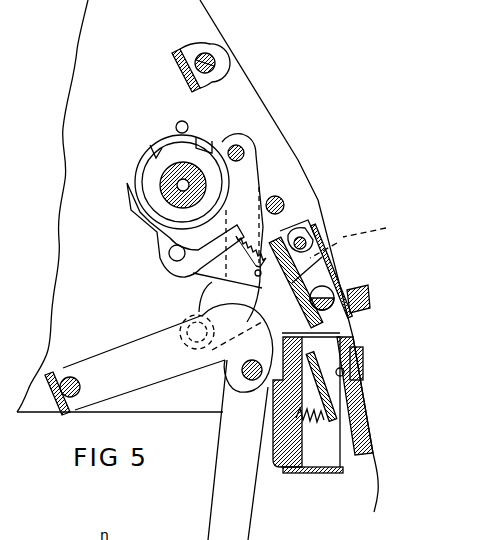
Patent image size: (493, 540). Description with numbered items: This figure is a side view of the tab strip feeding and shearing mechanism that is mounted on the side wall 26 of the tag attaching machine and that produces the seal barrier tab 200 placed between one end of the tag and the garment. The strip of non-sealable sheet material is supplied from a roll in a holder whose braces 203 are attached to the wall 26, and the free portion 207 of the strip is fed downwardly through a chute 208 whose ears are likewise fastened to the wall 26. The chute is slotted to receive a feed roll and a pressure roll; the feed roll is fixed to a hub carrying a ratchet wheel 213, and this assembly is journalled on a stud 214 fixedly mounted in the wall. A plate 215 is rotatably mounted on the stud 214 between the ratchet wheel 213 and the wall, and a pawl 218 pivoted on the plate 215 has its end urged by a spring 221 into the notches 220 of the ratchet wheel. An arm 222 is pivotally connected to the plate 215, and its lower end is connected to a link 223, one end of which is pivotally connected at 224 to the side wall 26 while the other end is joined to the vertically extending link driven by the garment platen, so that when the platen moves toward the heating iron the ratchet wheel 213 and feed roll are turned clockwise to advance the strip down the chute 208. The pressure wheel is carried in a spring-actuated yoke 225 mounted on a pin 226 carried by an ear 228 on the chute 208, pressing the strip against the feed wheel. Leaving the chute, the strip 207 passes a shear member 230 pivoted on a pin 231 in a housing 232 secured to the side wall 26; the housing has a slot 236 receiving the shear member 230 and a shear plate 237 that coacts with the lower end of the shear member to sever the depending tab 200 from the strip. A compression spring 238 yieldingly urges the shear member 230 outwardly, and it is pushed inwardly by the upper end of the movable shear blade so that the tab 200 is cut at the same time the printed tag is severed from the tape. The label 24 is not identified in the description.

The tab 200 is at (377, 488).
The frame wall 24 is at (297, 158).
The wall 26 is at (108, 107).
The braces 203 is at (180, 52).
The free portion of the strip material 207 is at (280, 217).
The chute 208 is at (318, 262).
The ratchet wheel 213 is at (190, 150).
The stud 214 is at (150, 155).
The plate 215 is at (207, 280).
The pawl 218 is at (147, 228).
The notches 220 is at (160, 175).
The spring 221 is at (249, 262).
The arm 222 is at (226, 413).
The link 223 is at (144, 362).
The pivot connection 224 is at (68, 375).
The yoke 225 is at (320, 248).
The pin 226 is at (297, 233).
The ear 228 is at (364, 237).
The shear member 230 is at (362, 408).
The pin 231 is at (364, 372).
The housing 232 is at (285, 468).
The slot 236 is at (327, 460).
The shear plate 237 is at (316, 477).
The compression spring 238 is at (314, 427).